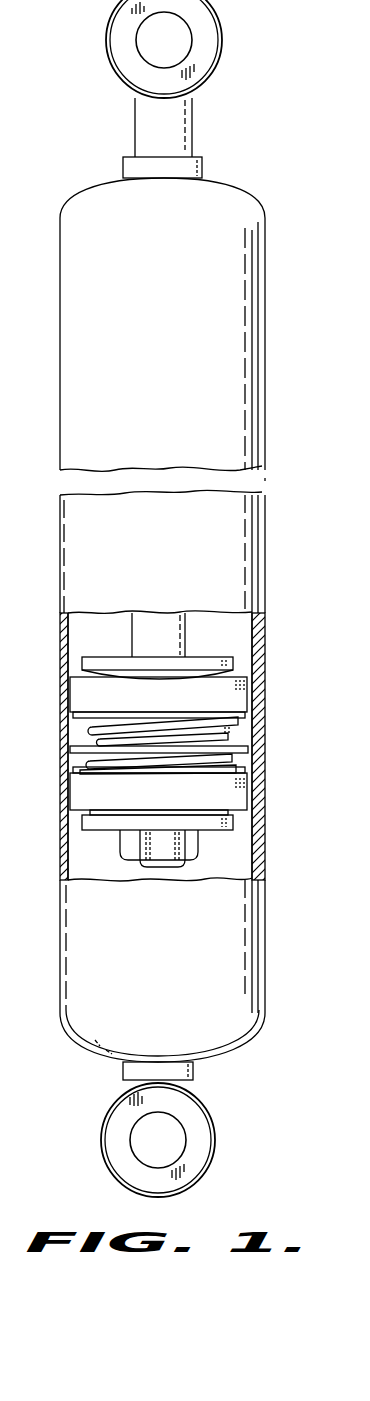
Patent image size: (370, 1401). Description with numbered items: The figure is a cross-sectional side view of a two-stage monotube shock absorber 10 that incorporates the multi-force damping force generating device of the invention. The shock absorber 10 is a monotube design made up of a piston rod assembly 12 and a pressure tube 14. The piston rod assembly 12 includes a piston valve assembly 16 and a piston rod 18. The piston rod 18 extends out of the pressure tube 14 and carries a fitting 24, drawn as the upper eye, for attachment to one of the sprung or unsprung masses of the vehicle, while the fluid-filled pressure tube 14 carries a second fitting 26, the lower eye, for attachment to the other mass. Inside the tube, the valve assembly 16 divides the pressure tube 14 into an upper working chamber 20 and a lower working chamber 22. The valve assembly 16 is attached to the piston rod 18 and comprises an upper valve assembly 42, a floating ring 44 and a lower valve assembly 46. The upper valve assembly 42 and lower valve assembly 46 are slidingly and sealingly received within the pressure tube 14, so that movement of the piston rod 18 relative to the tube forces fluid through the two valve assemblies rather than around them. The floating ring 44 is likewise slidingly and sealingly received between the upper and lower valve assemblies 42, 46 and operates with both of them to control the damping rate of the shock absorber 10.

The shock absorber 10 is at (296, 187).
The piston rod assembly 12 is at (214, 716).
The pressure tube 14 is at (225, 923).
The piston valve assembly 16 is at (227, 730).
The piston rod 18 is at (150, 624).
The upper working chamber 20 is at (237, 630).
The lower working chamber 22 is at (230, 852).
The fitting 24 is at (207, 27).
The fitting 26 is at (200, 1130).
The upper valve assembly 42 is at (227, 695).
The floating ring 44 is at (233, 750).
The lower valve assembly 46 is at (225, 793).